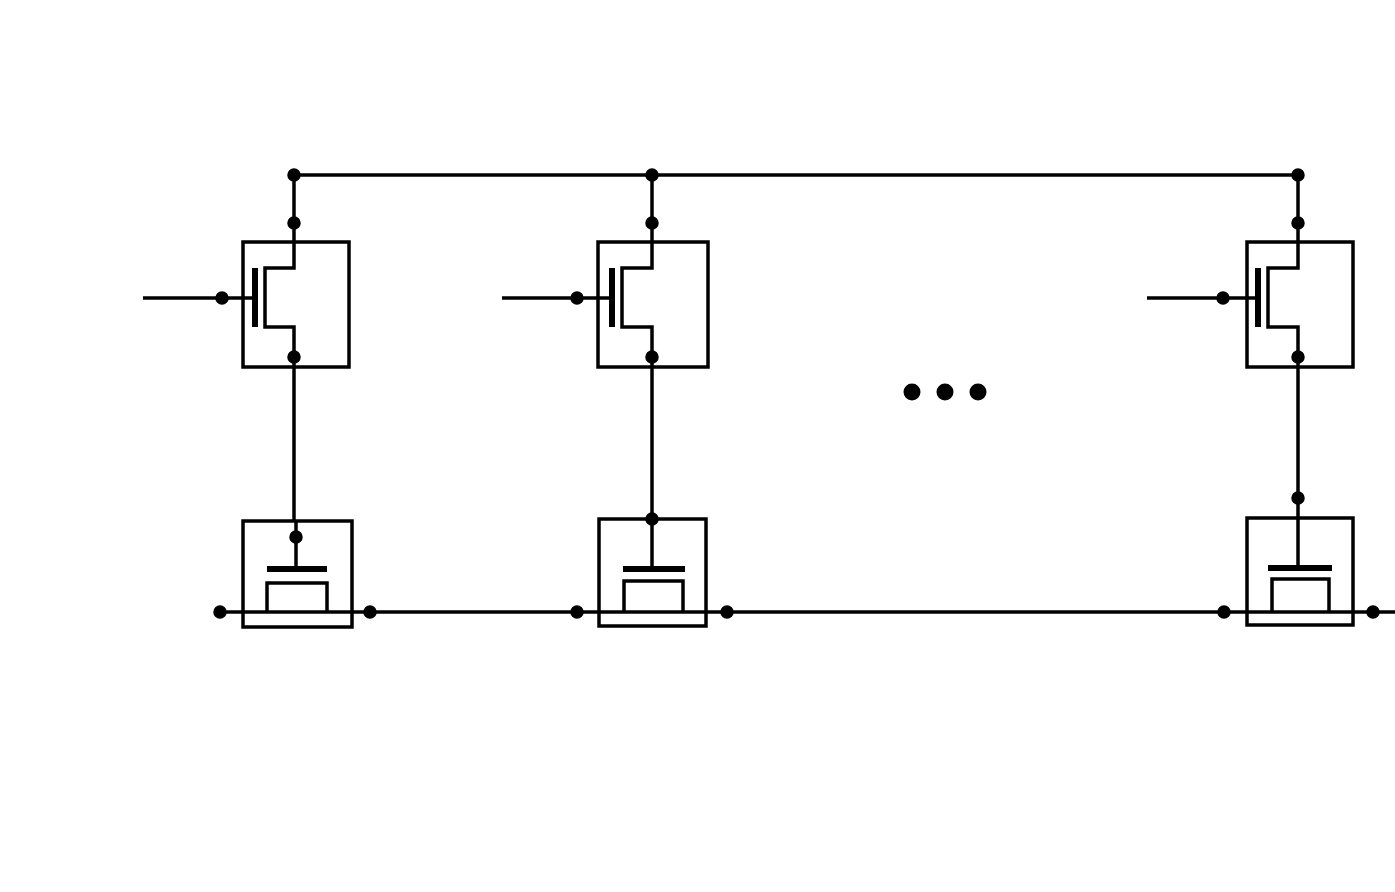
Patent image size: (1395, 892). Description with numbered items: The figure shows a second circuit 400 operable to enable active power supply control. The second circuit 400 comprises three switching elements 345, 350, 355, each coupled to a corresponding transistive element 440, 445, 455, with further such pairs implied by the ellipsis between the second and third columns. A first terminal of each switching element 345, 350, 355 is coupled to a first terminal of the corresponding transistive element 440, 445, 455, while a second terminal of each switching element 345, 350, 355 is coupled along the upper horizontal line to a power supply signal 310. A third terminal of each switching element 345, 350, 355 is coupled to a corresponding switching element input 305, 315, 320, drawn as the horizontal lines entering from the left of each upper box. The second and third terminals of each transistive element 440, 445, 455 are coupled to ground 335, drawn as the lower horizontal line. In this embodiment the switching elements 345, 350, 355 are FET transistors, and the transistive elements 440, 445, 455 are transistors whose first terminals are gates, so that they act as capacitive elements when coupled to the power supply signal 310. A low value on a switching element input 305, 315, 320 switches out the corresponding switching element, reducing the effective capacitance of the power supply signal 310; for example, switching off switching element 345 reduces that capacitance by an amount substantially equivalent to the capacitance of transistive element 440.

The second circuit 400 is at (817, 687).
The power supply signal 310 is at (294, 165).
The ground 335 is at (478, 614).
The switching element input 305 is at (163, 297).
The switching element input 315 is at (512, 297).
The switching element input 320 is at (1150, 297).
The switching element 345 is at (262, 242).
The switching element 350 is at (620, 242).
The switching element 355 is at (1268, 242).
The transistive element 440 is at (262, 521).
The transistive element 445 is at (620, 519).
The transistive element 455 is at (1268, 518).